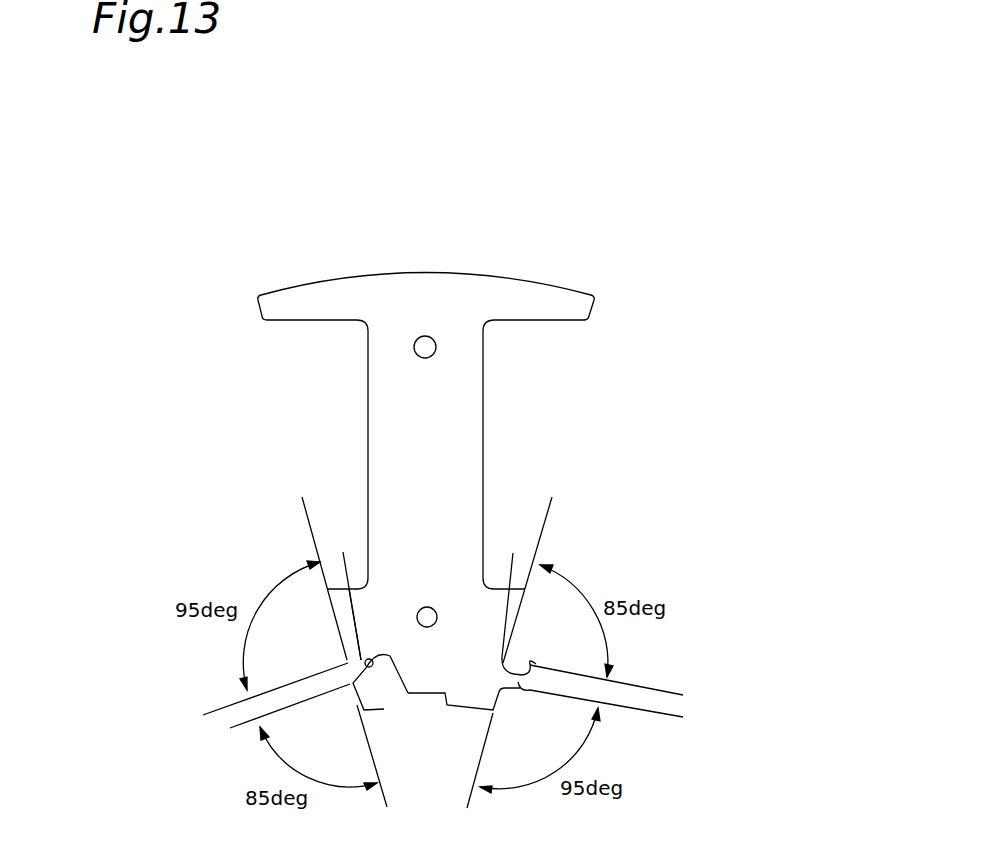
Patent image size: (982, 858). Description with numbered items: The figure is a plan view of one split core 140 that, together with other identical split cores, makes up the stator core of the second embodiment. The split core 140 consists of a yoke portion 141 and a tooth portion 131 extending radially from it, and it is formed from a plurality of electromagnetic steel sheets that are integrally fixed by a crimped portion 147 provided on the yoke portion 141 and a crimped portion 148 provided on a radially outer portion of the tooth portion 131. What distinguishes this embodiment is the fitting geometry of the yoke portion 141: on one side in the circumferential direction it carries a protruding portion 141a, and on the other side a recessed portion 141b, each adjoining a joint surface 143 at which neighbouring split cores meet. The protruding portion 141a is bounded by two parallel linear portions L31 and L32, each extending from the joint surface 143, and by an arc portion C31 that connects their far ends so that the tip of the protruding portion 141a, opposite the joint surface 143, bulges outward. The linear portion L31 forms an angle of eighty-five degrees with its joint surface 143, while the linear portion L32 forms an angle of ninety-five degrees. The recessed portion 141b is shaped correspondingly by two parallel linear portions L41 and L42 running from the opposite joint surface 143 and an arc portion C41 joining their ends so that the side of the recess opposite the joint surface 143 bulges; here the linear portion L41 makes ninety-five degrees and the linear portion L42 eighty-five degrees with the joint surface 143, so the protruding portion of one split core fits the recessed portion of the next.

The split core 140 is at (624, 250).
The tooth portion 131 is at (427, 283).
The yoke portion 141 is at (402, 633).
The crimped portion 148 is at (437, 347).
The crimped portion 147 is at (430, 607).
The joint surface 143 is at (332, 620).
The protruding portion 141a is at (510, 610).
The recessed portion 141b is at (350, 690).
The linear portion L41 is at (340, 595).
The linear portion L42 is at (375, 672).
The linear portion L31 is at (531, 665).
The linear portion L32 is at (512, 690).
The arc portion C41 is at (408, 693).
The arc portion C31 is at (542, 690).